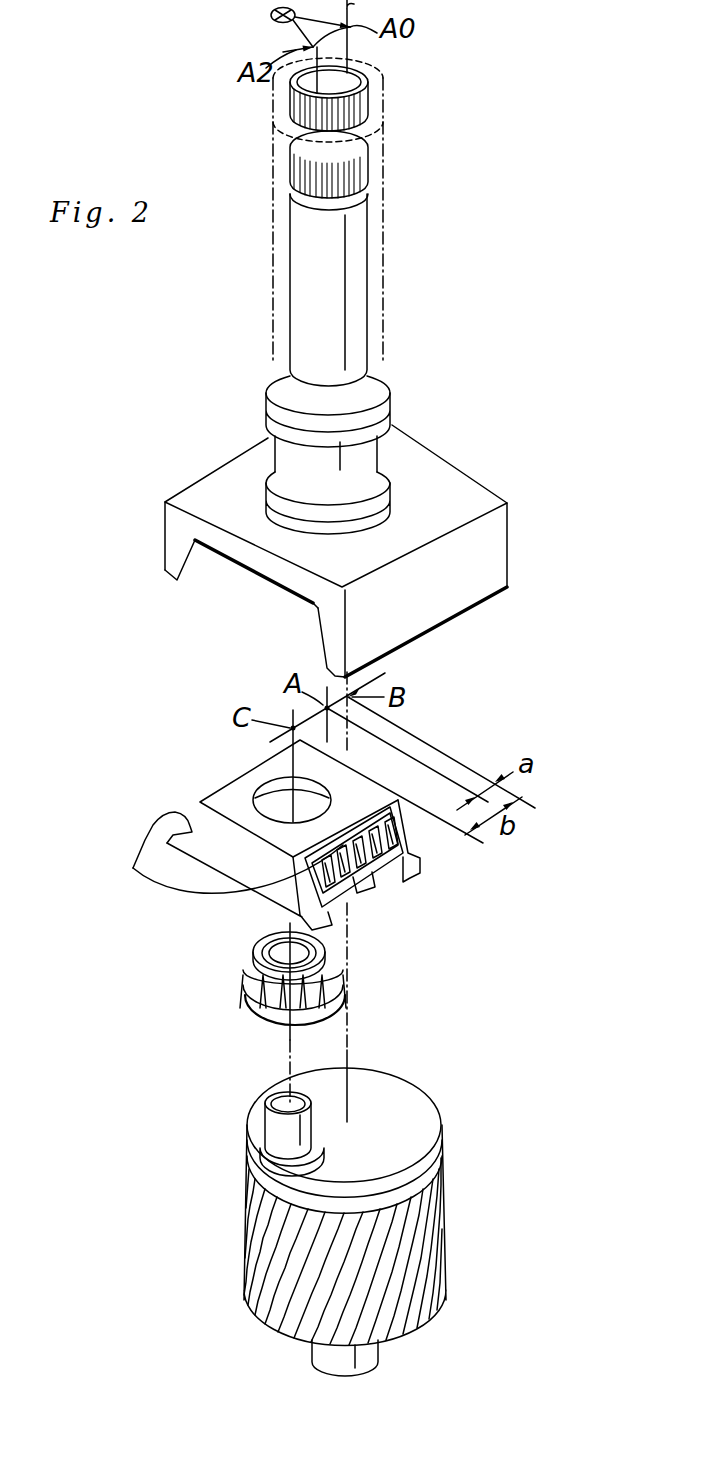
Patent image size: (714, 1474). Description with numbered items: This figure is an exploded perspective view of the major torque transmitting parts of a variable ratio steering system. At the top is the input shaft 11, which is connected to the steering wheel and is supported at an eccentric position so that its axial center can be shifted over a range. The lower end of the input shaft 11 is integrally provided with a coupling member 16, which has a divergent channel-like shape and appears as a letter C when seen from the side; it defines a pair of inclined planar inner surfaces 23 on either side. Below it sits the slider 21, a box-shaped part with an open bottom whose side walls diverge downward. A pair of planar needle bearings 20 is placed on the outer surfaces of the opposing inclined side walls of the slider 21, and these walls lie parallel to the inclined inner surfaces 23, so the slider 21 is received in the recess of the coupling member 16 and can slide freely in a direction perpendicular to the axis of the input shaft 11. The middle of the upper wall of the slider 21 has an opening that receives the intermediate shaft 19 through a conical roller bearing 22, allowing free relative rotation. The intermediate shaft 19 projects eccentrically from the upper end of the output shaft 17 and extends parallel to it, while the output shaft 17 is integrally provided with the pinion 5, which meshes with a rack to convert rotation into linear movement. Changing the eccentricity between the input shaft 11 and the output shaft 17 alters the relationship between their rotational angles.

The pinion 5 is at (445, 1237).
The input shaft 11 is at (368, 300).
The coupling member 16 is at (500, 558).
The output shaft 17 is at (268, 1177).
The intermediate shaft 19 is at (267, 1123).
The planar needle bearings 20 is at (133, 868).
The slider 21 is at (235, 792).
The conical roller bearing 22 is at (243, 985).
The inclined planar inner surfaces 23 is at (245, 634).